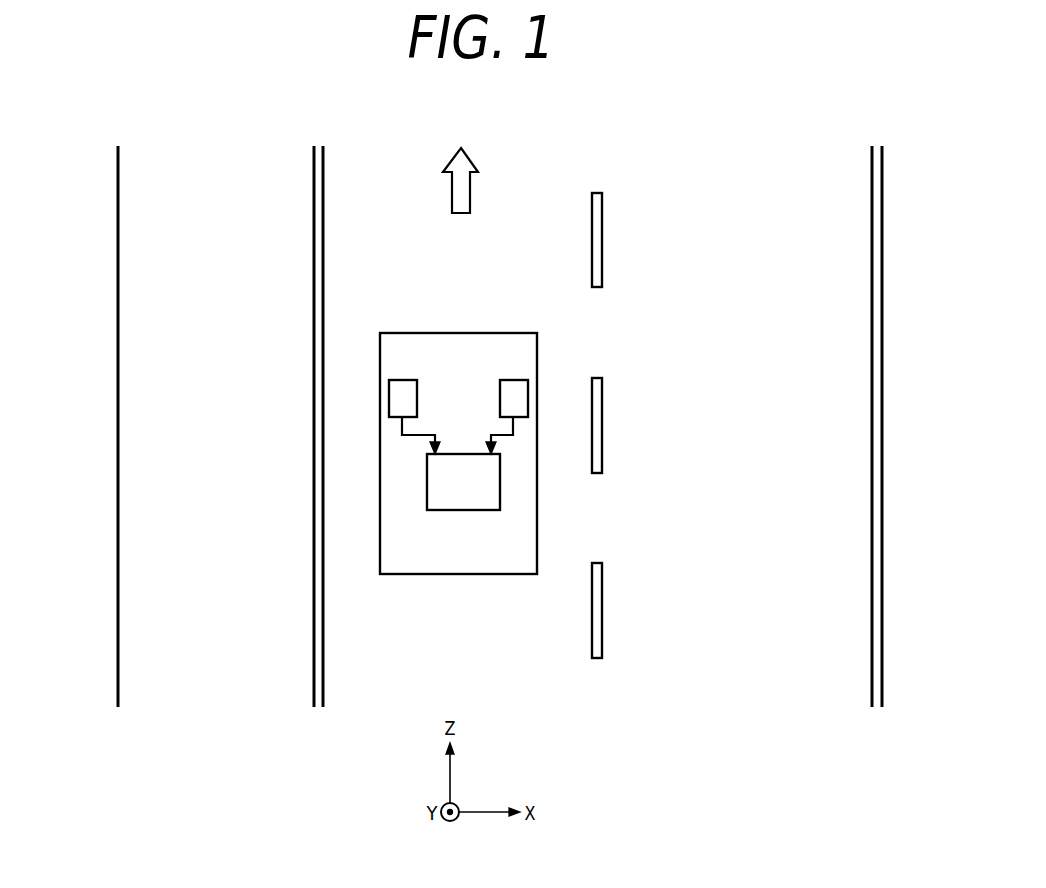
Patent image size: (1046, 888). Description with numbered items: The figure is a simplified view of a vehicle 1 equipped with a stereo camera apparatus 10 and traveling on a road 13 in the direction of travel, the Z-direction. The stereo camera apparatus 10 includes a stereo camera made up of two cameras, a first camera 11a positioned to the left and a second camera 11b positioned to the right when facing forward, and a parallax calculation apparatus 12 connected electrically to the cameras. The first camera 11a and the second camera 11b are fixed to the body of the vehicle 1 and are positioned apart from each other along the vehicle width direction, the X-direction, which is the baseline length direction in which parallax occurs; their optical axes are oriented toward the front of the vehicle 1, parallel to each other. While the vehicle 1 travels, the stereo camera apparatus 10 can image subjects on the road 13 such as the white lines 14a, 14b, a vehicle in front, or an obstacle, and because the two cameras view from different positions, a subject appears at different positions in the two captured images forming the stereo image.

The vehicle 1 is at (537, 505).
The stereo camera apparatus 10 is at (515, 364).
The first camera 11a is at (405, 380).
The second camera 11b is at (494, 380).
The parallax calculation apparatus 12 is at (463, 510).
The road 13 is at (530, 236).
The white line 14a is at (314, 277).
The white line 14b is at (602, 243).